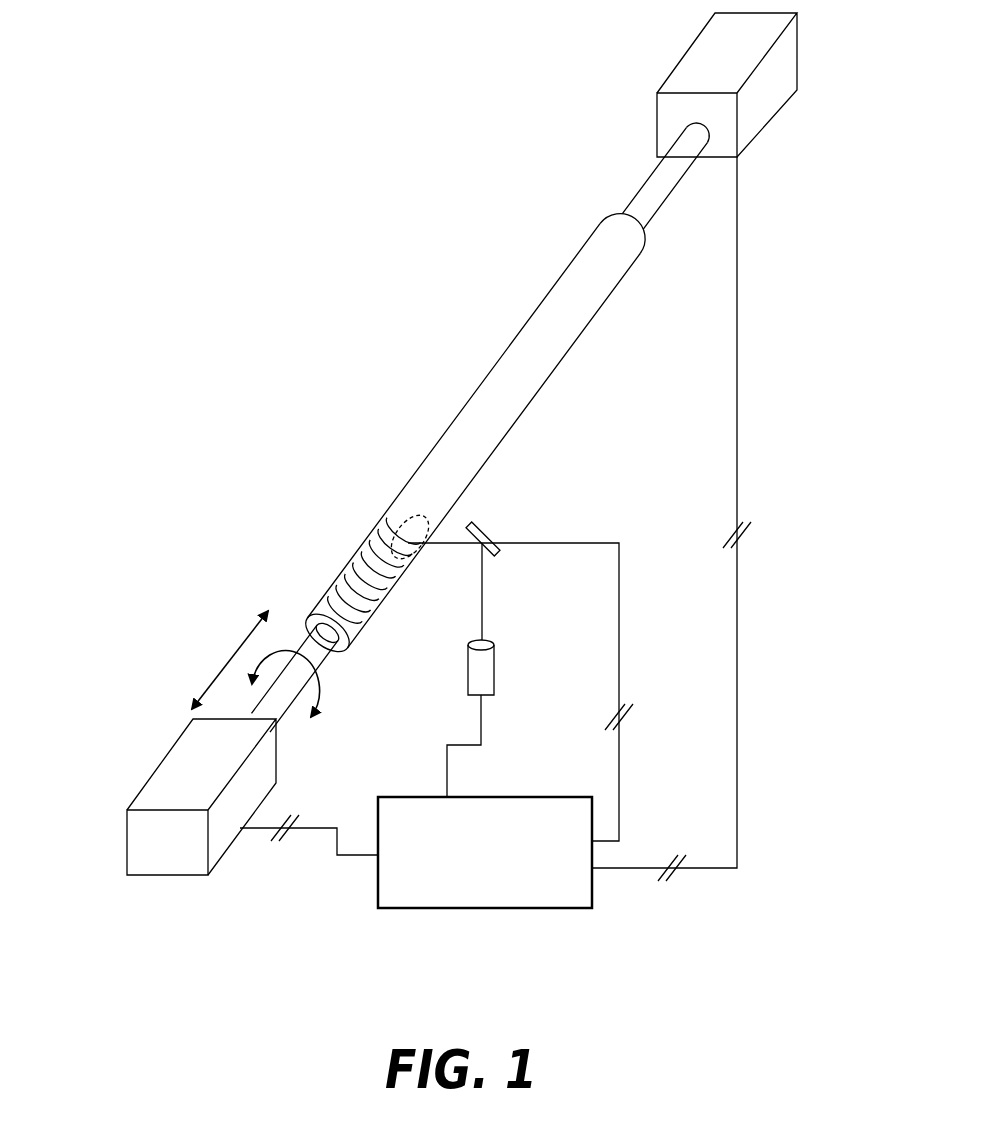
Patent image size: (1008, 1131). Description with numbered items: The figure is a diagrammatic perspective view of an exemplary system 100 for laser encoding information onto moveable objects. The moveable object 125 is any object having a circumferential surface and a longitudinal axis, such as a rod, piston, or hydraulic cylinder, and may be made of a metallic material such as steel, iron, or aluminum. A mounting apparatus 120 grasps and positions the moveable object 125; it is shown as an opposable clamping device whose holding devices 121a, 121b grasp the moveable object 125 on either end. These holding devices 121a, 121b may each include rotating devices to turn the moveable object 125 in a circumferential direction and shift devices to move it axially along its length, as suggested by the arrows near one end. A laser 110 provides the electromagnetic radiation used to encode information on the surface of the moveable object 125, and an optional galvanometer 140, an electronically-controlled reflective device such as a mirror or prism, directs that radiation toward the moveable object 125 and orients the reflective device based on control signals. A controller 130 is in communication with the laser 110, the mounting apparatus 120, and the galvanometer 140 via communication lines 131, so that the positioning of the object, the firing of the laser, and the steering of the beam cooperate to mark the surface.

The system 100 is at (510, 149).
The laser 110 is at (468, 677).
The mounting apparatus 120 is at (188, 771).
The holding device 121a is at (762, 97).
The holding device 121b is at (210, 867).
The moveable object 125 is at (478, 386).
The controller 130 is at (467, 908).
The communication lines 131 is at (482, 725).
The galvanometer 140 is at (477, 523).